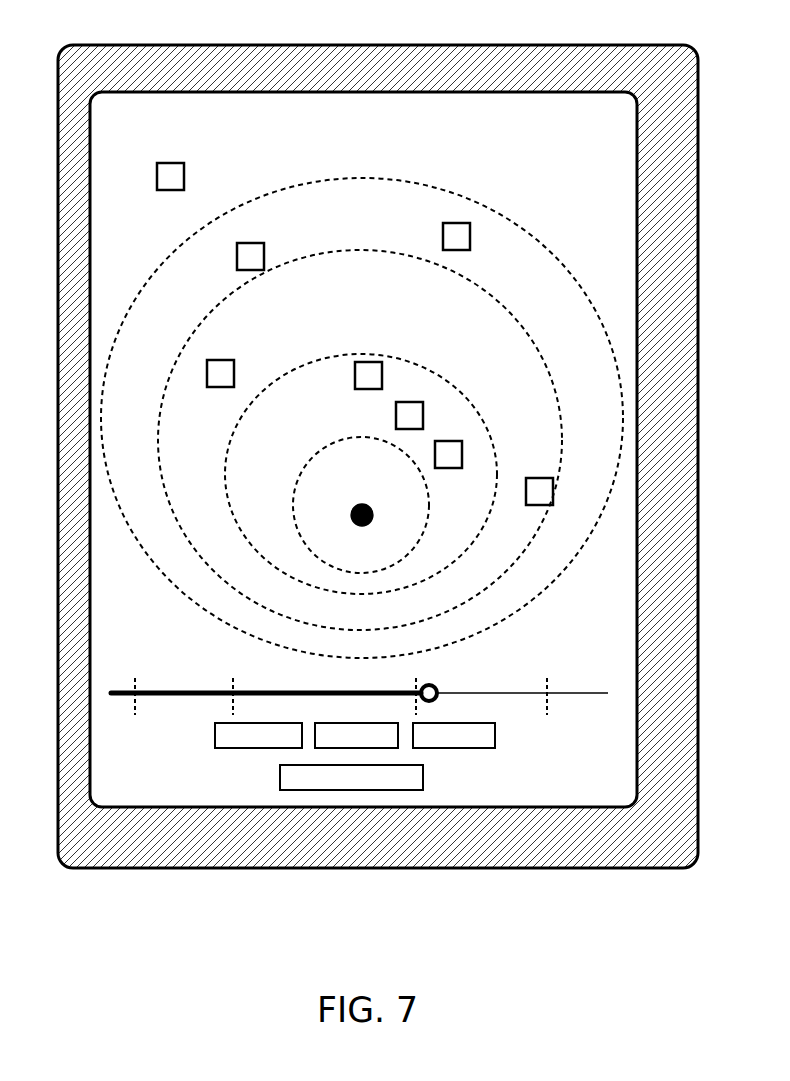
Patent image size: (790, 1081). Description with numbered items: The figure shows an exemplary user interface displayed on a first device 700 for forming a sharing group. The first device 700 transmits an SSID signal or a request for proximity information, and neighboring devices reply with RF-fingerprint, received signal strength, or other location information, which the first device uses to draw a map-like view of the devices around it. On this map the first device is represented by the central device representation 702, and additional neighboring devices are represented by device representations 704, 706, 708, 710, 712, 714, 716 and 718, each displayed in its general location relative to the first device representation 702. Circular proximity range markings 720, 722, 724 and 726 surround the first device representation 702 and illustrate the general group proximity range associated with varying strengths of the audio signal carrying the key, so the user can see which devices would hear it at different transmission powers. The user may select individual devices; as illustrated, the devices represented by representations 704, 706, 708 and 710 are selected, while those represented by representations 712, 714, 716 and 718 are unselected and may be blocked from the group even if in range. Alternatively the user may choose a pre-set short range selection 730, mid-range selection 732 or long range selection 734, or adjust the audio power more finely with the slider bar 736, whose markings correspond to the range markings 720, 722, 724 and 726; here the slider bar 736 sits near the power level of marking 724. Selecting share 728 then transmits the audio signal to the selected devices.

The first device 700 is at (396, 46).
The first device representation D1 702 is at (369, 496).
The device representation D2 704 is at (376, 352).
The device representation D3 706 is at (396, 412).
The device representation D4 708 is at (446, 467).
The device representation D5 710 is at (540, 478).
The device representation D6 712 is at (232, 352).
The device representation D7 714 is at (268, 234).
The device representation D8 716 is at (443, 236).
The device representation D9 718 is at (186, 154).
The circular proximity range marking 720 is at (330, 438).
The circular proximity range marking 722 is at (318, 357).
The circular proximity range marking 724 is at (342, 244).
The circular proximity range marking 726 is at (352, 170).
The share selection 728 is at (280, 786).
The short range selection 730 is at (225, 748).
The mid-range selection 732 is at (332, 723).
The long range selection 734 is at (483, 748).
The slider bar 736 is at (175, 692).